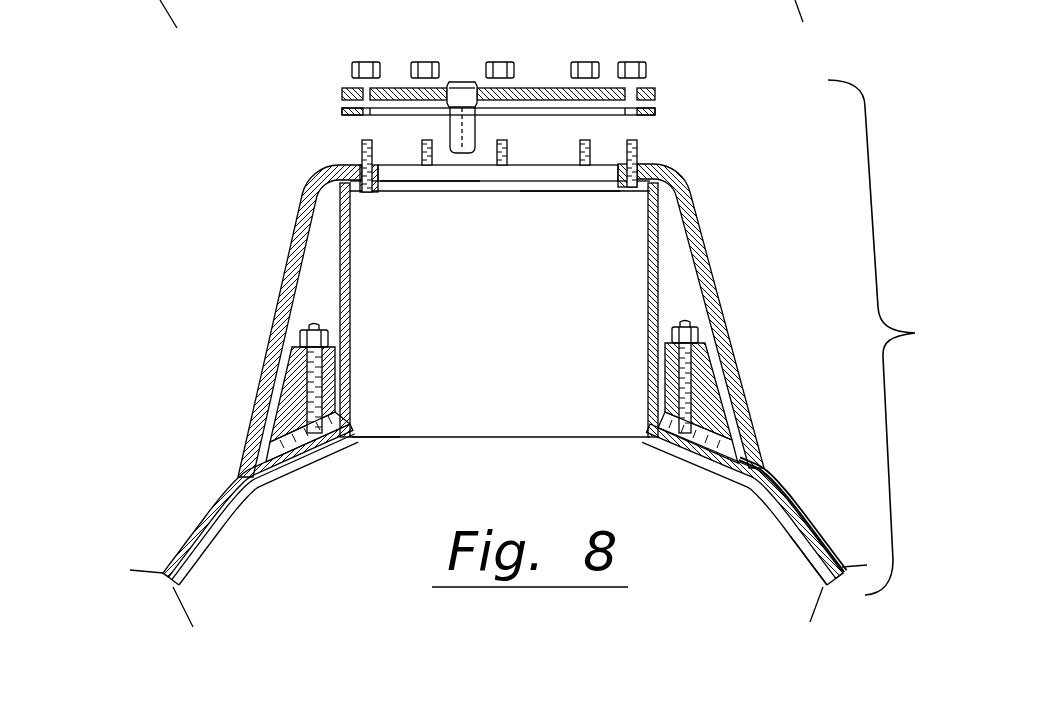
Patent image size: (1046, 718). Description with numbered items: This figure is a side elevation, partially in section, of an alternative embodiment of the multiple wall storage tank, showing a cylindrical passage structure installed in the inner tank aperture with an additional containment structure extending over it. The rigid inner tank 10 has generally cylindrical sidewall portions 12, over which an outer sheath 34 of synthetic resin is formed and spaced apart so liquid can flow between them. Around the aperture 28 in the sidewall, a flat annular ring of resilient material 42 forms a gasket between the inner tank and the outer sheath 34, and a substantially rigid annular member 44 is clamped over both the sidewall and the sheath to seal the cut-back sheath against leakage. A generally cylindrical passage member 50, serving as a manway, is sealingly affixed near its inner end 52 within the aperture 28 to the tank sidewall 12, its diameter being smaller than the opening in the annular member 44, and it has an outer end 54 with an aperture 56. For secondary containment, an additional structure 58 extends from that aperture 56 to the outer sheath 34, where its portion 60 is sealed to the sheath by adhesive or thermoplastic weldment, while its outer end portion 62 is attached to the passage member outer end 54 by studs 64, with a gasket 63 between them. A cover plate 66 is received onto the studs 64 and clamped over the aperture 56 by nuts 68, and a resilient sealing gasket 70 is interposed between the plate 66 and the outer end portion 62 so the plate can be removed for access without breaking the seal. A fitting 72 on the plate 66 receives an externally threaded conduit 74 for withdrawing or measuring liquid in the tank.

The inner tank 10 is at (778, 537).
The sidewall portions 12 is at (288, 468).
The aperture 28 is at (380, 443).
The outer sheath 34 is at (212, 510).
The resilient material 42 is at (307, 452).
The annular member 44 is at (717, 385).
The cylindrical passage member 50 is at (340, 248).
The inner end 52 is at (502, 438).
The outer end 54 is at (392, 181).
The aperture 56 is at (582, 191).
The additional structure 58 is at (712, 248).
The portion 60 is at (766, 461).
The outer end portion 62 is at (656, 163).
The gasket 63 is at (698, 200).
The studs 64 is at (362, 145).
The plate 66 is at (655, 92).
The nuts 68 is at (428, 62).
The gasket plate 70 is at (655, 112).
The fitting 72 is at (466, 82).
The conduit 74 is at (476, 128).